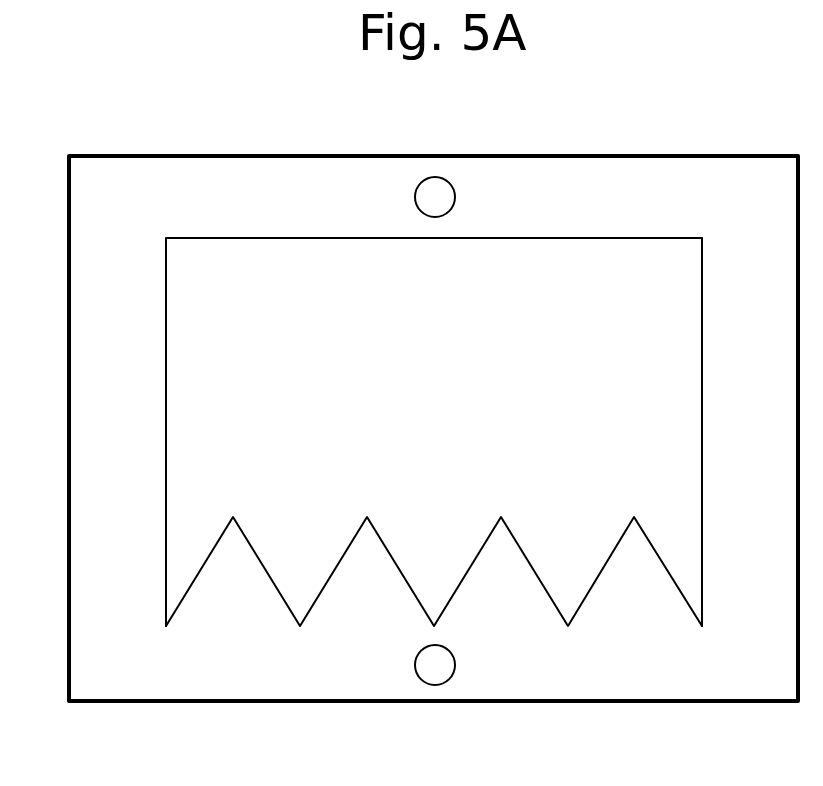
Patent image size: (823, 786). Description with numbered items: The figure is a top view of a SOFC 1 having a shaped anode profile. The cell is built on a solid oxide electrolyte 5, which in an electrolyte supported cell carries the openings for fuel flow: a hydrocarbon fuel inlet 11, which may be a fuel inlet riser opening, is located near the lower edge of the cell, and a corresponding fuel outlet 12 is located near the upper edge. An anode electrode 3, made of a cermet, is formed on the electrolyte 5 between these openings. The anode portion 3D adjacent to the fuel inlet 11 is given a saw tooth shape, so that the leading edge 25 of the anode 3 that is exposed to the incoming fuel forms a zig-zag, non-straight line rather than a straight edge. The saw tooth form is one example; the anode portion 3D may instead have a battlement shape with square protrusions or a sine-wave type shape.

The SOFC 1 is at (762, 119).
The solid oxide electrolyte 5 is at (69, 378).
The anode electrode 3 is at (166, 436).
The anode portion 3D is at (676, 522).
The fuel outlet 12 is at (415, 197).
The fuel inlet 11 is at (415, 665).
The leading edge 25 is at (254, 568).